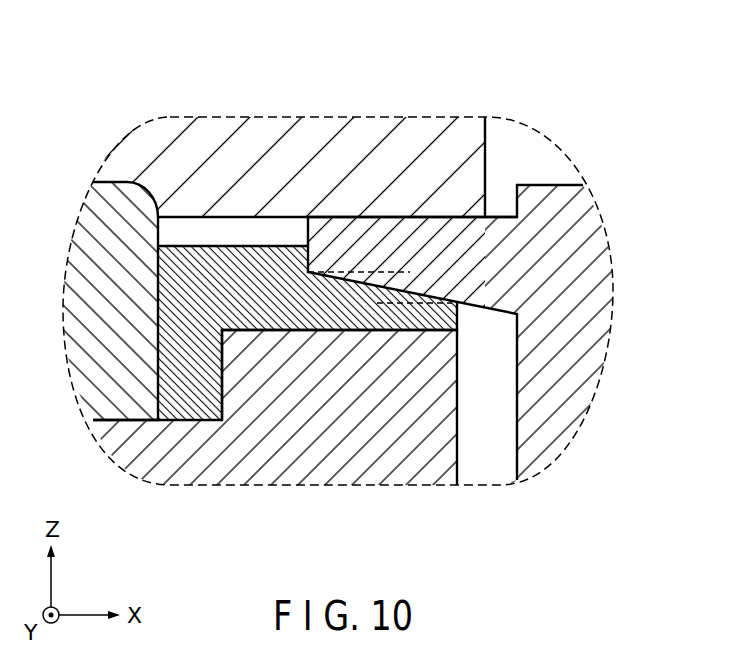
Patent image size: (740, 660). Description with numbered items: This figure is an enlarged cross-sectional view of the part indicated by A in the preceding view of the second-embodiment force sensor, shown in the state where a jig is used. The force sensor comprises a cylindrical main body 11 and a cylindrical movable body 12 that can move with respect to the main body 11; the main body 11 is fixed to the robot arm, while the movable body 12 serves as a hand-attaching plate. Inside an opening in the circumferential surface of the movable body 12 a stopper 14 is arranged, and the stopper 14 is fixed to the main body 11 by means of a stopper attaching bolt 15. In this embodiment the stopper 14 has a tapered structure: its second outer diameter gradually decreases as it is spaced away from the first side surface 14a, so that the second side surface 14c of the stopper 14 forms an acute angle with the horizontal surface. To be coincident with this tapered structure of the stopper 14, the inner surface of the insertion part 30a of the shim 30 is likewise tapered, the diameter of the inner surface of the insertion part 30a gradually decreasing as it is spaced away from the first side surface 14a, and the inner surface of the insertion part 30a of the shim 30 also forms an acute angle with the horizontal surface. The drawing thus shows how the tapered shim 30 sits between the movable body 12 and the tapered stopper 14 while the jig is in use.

The enlarged part A is at (121, 116).
The main body 11 is at (124, 319).
The movable body 12 is at (327, 176).
The stopper 14 is at (231, 314).
The first side surface 14a is at (210, 243).
The second side surface 14c is at (330, 283).
The stopper attaching bolt 15 is at (329, 462).
The shim 30 is at (613, 298).
The insertion part 30a is at (448, 257).